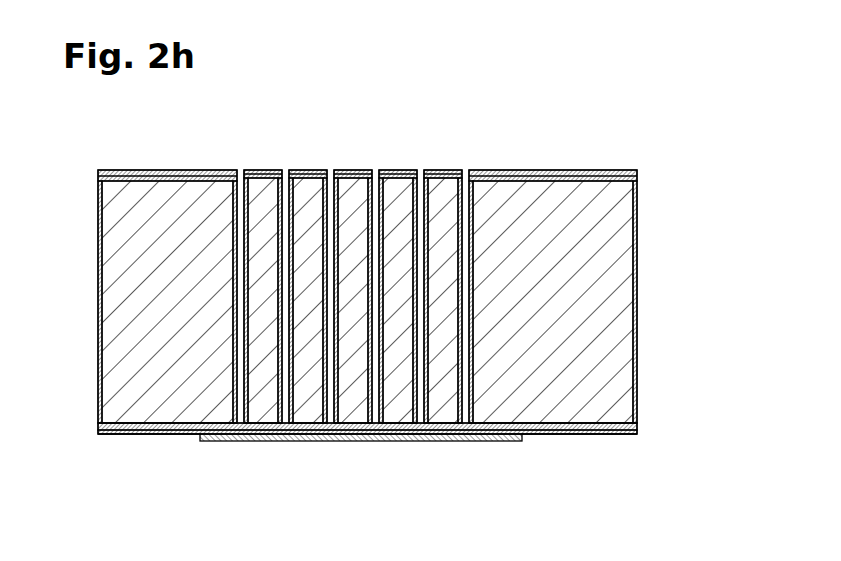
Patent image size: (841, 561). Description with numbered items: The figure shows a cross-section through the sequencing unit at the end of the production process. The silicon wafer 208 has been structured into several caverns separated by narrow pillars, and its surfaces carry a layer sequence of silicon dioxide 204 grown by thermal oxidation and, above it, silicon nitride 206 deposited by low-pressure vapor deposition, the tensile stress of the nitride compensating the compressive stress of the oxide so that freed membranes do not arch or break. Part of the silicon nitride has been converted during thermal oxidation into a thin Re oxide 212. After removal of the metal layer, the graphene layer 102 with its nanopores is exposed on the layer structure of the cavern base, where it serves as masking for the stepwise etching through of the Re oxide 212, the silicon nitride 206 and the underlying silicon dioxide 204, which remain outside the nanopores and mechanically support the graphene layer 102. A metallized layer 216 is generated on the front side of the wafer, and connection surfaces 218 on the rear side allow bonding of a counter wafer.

The graphene layer 102 is at (376, 446).
The silicon dioxide 204 is at (556, 423).
The silicon nitride 206 is at (128, 170).
The silicon wafer 208 is at (620, 326).
The Re oxide 212 is at (600, 433).
The metallized layer 216 is at (440, 164).
The connection surfaces 218 is at (158, 446).